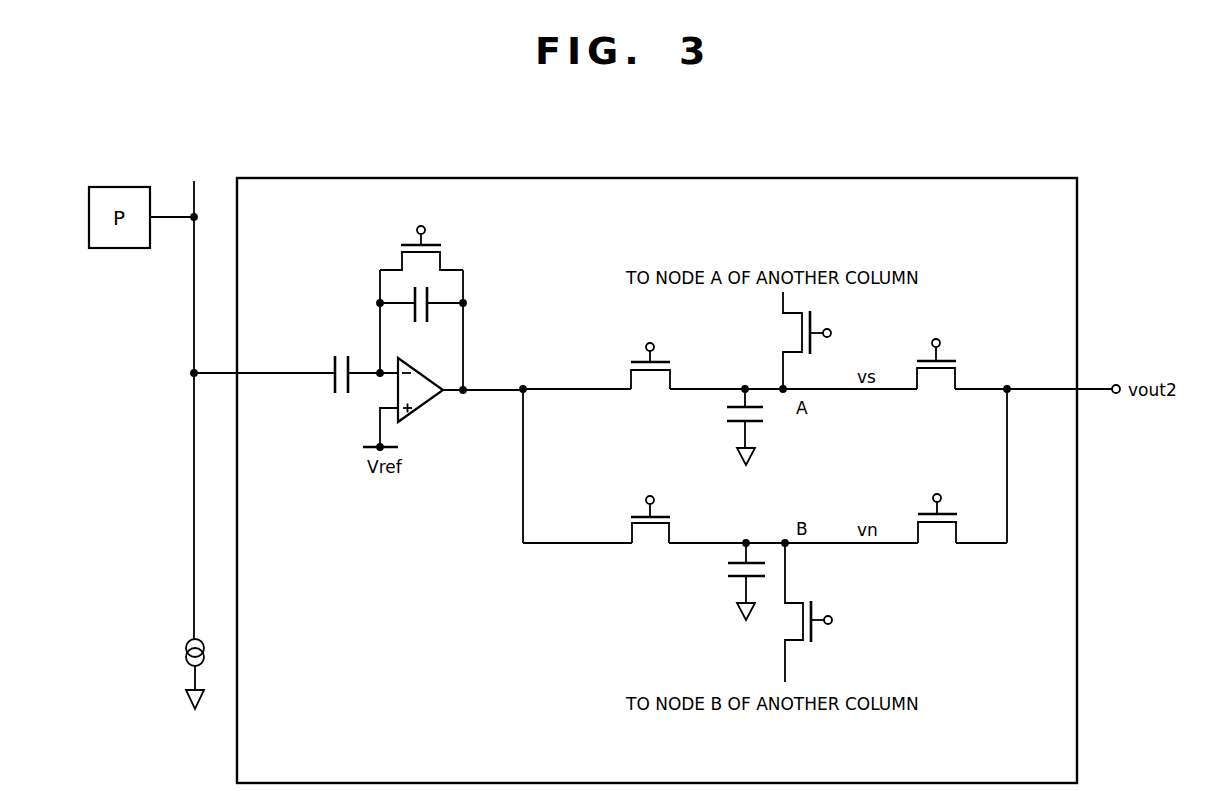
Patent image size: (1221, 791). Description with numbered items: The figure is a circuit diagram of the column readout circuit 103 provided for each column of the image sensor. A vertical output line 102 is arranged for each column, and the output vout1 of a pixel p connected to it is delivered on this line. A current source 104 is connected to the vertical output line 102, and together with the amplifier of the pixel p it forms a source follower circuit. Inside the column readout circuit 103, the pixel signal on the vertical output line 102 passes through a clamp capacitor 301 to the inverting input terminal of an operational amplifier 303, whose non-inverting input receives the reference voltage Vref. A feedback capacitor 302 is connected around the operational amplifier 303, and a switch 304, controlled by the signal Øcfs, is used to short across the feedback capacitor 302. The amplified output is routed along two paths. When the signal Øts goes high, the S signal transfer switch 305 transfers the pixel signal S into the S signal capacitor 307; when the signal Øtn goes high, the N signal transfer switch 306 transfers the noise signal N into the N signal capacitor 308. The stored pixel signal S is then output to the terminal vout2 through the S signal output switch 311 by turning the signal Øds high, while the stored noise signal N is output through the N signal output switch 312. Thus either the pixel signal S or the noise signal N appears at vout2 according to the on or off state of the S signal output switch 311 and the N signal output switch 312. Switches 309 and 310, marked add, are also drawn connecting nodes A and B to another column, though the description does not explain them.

The vertical output line 102 is at (194, 196).
The column readout circuit 103 is at (1008, 178).
The current source 104 is at (185, 648).
The clamp capacitor 301 is at (336, 397).
The feedback capacitor 302 is at (432, 297).
The operational amplifier 303 is at (422, 405).
The switch 304 is at (437, 233).
The S signal transfer switch 305 is at (651, 392).
The N signal transfer switch 306 is at (651, 546).
The S signal capacitor 307 is at (727, 414).
The N signal capacitor 308 is at (728, 572).
The addition switch 309 is at (783, 333).
The addition switch 310 is at (790, 624).
The S signal output switch 311 is at (937, 392).
The N signal output switch 312 is at (938, 546).